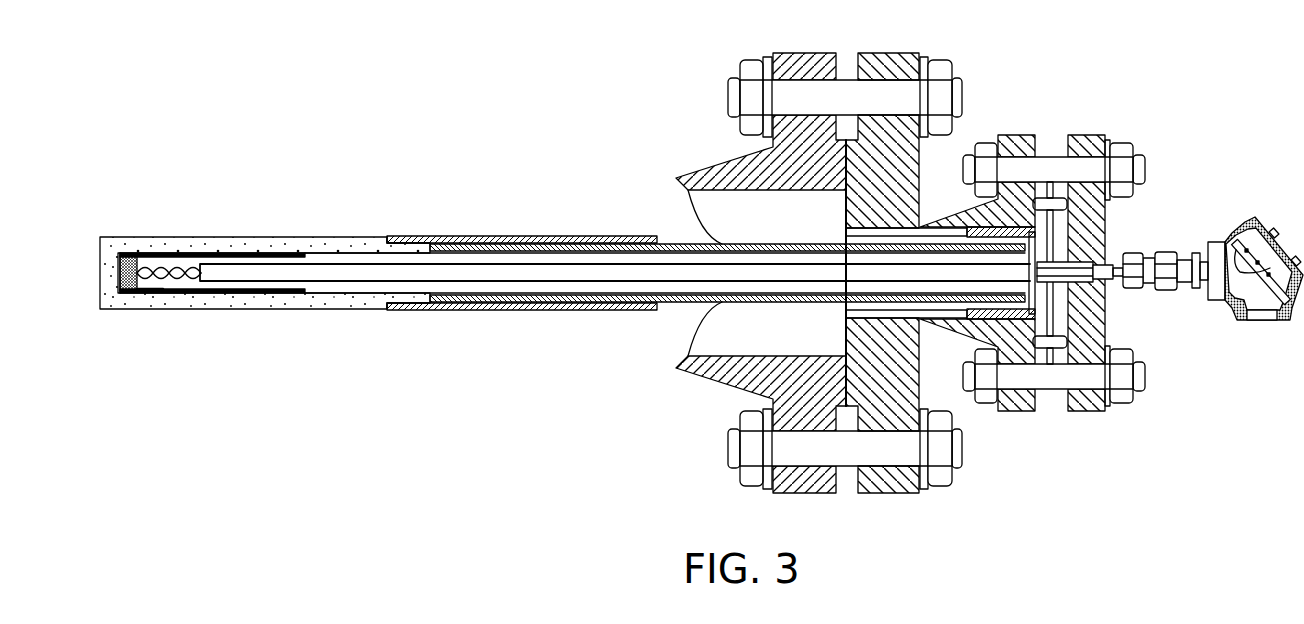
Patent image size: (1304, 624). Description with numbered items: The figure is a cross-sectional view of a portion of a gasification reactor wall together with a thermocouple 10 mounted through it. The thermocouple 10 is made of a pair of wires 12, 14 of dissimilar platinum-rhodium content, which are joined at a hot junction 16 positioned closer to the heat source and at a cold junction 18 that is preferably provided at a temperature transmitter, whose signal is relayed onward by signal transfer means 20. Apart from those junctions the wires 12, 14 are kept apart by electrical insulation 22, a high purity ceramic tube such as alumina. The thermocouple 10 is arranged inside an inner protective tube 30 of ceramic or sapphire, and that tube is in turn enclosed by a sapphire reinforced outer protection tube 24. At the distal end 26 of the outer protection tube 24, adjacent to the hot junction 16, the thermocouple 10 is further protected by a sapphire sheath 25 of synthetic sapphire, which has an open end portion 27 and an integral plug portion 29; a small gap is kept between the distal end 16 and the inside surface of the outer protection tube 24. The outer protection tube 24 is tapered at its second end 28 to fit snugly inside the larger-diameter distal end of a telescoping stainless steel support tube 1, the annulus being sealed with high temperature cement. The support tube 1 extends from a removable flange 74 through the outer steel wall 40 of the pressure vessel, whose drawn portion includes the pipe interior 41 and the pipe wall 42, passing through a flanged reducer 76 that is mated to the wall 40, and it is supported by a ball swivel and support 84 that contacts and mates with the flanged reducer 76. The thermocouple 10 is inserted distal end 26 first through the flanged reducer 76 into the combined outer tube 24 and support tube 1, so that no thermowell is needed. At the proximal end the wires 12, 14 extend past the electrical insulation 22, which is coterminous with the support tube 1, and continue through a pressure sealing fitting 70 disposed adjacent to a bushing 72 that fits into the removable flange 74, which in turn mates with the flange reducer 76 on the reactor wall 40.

The support tube 1 is at (485, 308).
The thermocouple 10 is at (383, 75).
The thermocouple wire 12 is at (1107, 260).
The thermocouple wire 14 is at (1073, 282).
The hot junction 16 is at (153, 268).
The cold junction 18 is at (1117, 262).
The signal transfer means 20 is at (1137, 257).
The electrical insulation 22 is at (450, 270).
The sapphire reinforced outer protection tube 24 is at (243, 240).
The sapphire sheath 25 is at (300, 255).
The distal end 26 is at (111, 287).
The open end portion 27 is at (272, 292).
The second end 28 is at (400, 313).
The plug portion 29 is at (128, 293).
The inner protective tube 30 is at (405, 245).
The outer steel wall 40 is at (805, 53).
The pipe interior 41 is at (703, 208).
The pipe wall 42 is at (722, 162).
The pressure sealing fitting 70 is at (1145, 288).
The bushing 72 is at (1185, 283).
The removable flange 74 is at (1080, 142).
The flanged reducer 76 is at (900, 58).
The ball swivel and support 84 is at (1003, 307).